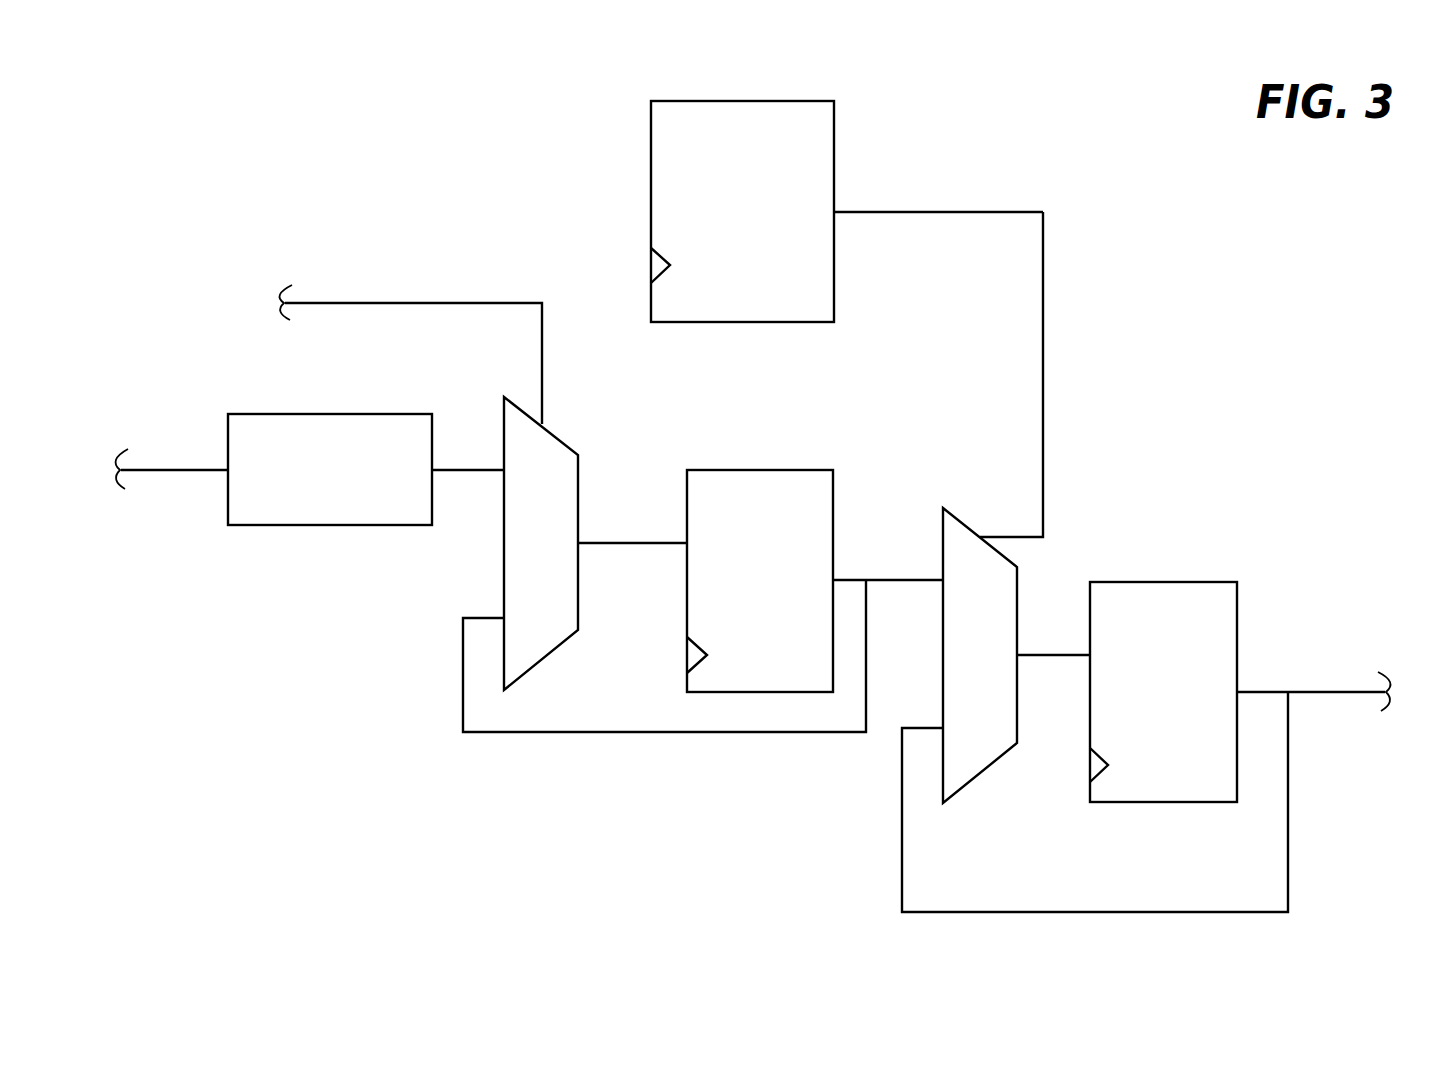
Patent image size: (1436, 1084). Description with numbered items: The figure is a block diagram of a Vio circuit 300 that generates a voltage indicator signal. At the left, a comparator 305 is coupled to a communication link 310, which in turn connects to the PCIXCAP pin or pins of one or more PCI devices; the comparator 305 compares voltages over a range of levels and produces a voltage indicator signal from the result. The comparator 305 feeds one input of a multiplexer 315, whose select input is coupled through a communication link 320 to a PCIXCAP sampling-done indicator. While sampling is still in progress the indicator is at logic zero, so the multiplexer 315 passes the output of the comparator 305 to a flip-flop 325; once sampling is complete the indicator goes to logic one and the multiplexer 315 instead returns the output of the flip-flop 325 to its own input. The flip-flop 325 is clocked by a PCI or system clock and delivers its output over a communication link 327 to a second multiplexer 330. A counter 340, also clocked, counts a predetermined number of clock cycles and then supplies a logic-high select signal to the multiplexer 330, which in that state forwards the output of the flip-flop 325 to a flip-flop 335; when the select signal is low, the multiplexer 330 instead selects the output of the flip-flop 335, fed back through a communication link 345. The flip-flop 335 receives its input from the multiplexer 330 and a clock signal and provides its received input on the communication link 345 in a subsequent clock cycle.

The Vio circuit 300 is at (1143, 373).
The comparator 305 is at (228, 432).
The communication link 310 is at (192, 475).
The multiplexer 315 is at (580, 470).
The communication link 320 is at (469, 302).
The flip-flop 325 is at (835, 506).
The communication link 327 is at (925, 578).
The multiplexer 330 is at (1019, 580).
The flip-flop 335 is at (1238, 618).
The counter 340 is at (651, 176).
The communication link 345 is at (1309, 690).